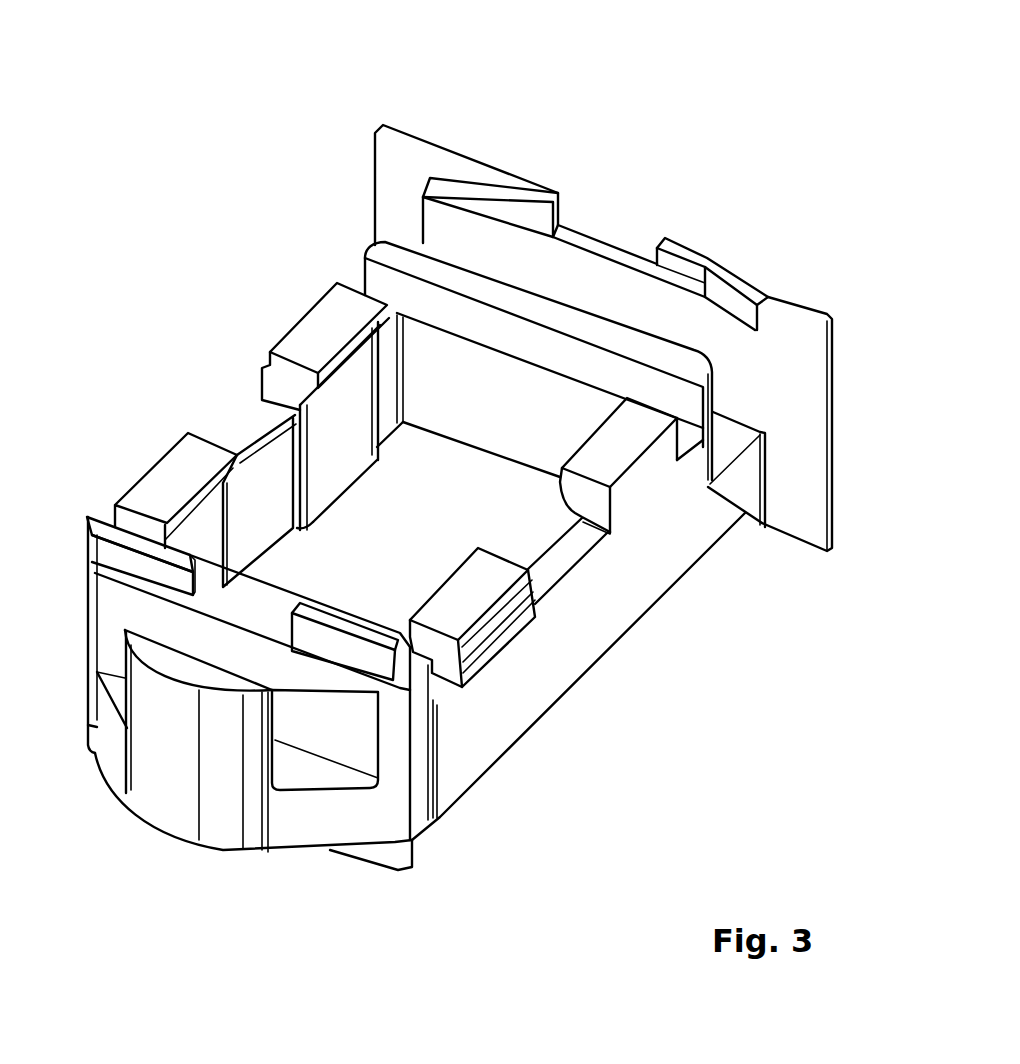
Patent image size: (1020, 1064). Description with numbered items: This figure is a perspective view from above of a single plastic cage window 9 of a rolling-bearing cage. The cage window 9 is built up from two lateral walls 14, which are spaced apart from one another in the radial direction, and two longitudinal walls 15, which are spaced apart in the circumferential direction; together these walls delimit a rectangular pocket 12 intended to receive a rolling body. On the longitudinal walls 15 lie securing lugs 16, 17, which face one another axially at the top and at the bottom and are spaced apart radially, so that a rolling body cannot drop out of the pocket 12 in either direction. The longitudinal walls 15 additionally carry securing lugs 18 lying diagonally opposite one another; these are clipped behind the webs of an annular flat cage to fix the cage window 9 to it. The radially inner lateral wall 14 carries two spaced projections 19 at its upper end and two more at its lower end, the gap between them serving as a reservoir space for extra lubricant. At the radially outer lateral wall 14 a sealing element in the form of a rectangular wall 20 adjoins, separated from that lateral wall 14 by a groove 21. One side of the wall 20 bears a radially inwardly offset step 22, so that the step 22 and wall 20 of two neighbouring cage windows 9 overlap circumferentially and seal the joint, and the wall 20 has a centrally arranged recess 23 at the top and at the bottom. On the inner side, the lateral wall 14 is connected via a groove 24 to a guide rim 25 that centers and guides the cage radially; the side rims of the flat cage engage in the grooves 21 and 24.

The cage window 9 is at (703, 108).
The pocket 12 is at (490, 518).
The lateral wall 14 is at (400, 256).
The longitudinal wall 15 is at (253, 435).
The securing lug 16 is at (332, 313).
The securing lug 17 is at (358, 487).
The securing lug 18 is at (263, 385).
The projection 19 is at (98, 532).
The rectangular wall 20 is at (394, 147).
The groove 21 is at (735, 436).
The step 22 is at (790, 320).
The recess 23 is at (612, 237).
The groove 24 is at (303, 775).
The guide rim 25 is at (148, 755).